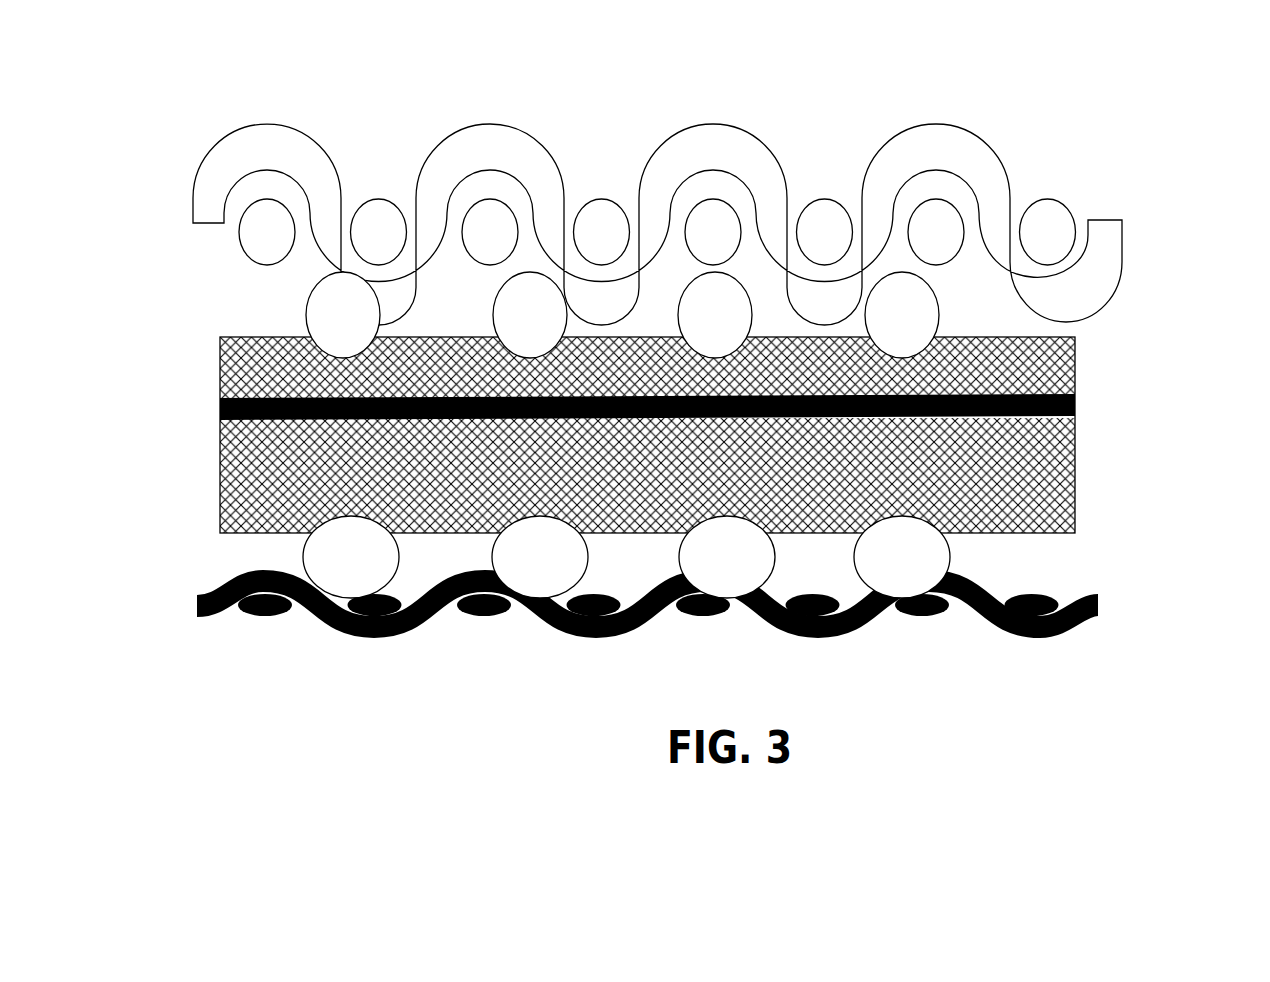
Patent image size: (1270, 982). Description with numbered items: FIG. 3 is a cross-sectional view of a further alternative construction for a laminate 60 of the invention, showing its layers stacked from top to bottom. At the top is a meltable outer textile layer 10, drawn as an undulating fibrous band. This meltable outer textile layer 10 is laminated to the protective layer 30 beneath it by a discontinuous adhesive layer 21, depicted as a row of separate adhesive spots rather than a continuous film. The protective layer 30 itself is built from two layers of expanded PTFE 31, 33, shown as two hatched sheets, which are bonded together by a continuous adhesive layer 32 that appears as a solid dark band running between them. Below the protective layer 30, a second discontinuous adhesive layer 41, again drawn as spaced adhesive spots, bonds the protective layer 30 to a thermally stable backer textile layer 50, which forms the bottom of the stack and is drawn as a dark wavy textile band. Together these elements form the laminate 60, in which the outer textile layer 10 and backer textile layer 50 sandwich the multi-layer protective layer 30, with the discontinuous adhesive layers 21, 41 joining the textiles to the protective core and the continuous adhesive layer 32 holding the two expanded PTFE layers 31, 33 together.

The laminate 60 is at (175, 153).
The meltable outer textile layer 10 is at (1122, 240).
The discontinuous adhesive layer 21 is at (937, 322).
The protective layer 30 is at (729, 435).
The expanded PTFE layer 31 is at (1047, 360).
The continuous adhesive layer 32 is at (1075, 405).
The expanded PTFE layer 33 is at (1055, 480).
The discontinuous adhesive layer 41 is at (950, 568).
The thermally stable backer textile layer 50 is at (1102, 615).